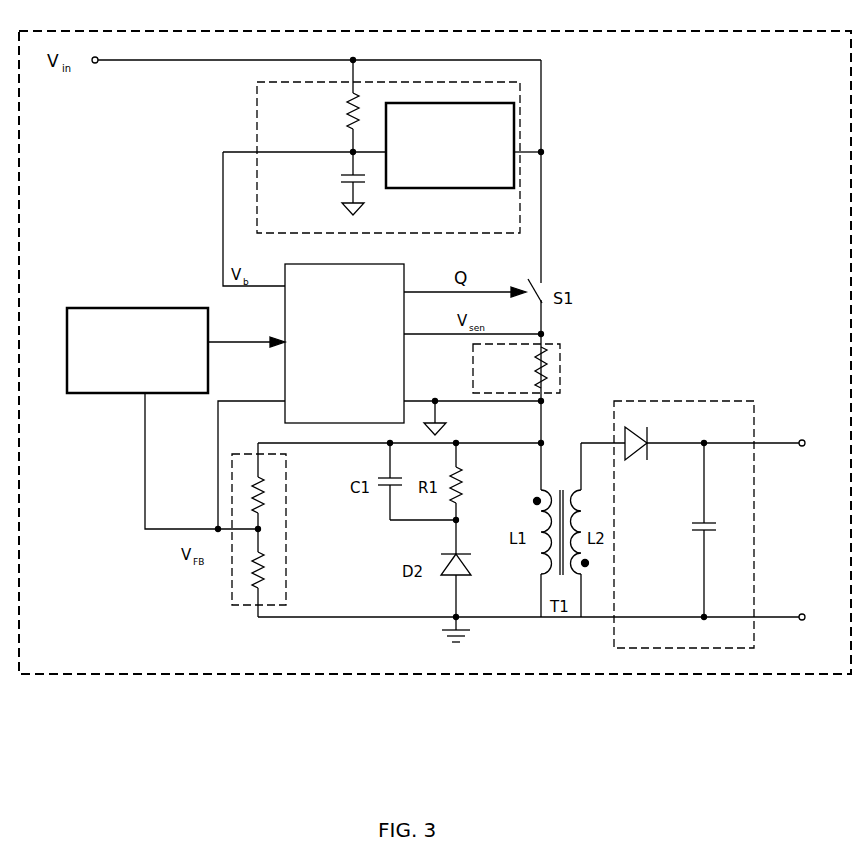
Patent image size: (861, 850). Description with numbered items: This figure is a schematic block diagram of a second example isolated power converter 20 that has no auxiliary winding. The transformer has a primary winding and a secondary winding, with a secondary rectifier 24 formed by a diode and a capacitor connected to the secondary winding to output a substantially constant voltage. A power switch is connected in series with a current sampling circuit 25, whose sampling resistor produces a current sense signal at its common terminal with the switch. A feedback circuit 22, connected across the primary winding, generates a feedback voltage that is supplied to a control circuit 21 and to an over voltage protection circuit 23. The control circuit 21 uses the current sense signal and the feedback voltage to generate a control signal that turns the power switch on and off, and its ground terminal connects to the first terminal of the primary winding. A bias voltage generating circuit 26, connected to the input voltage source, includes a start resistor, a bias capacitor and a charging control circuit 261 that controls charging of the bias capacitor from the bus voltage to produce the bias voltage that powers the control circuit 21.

The isolated power converter 20 is at (679, 75).
The control circuit 21 is at (408, 278).
The feedback circuit 22 is at (232, 606).
The over voltage protection circuit 23 is at (110, 307).
The secondary rectifier 24 is at (700, 401).
The current sampling circuit 25 is at (560, 372).
The bias voltage generating circuit 26 is at (378, 146).
The charging control circuit 261 is at (468, 188).